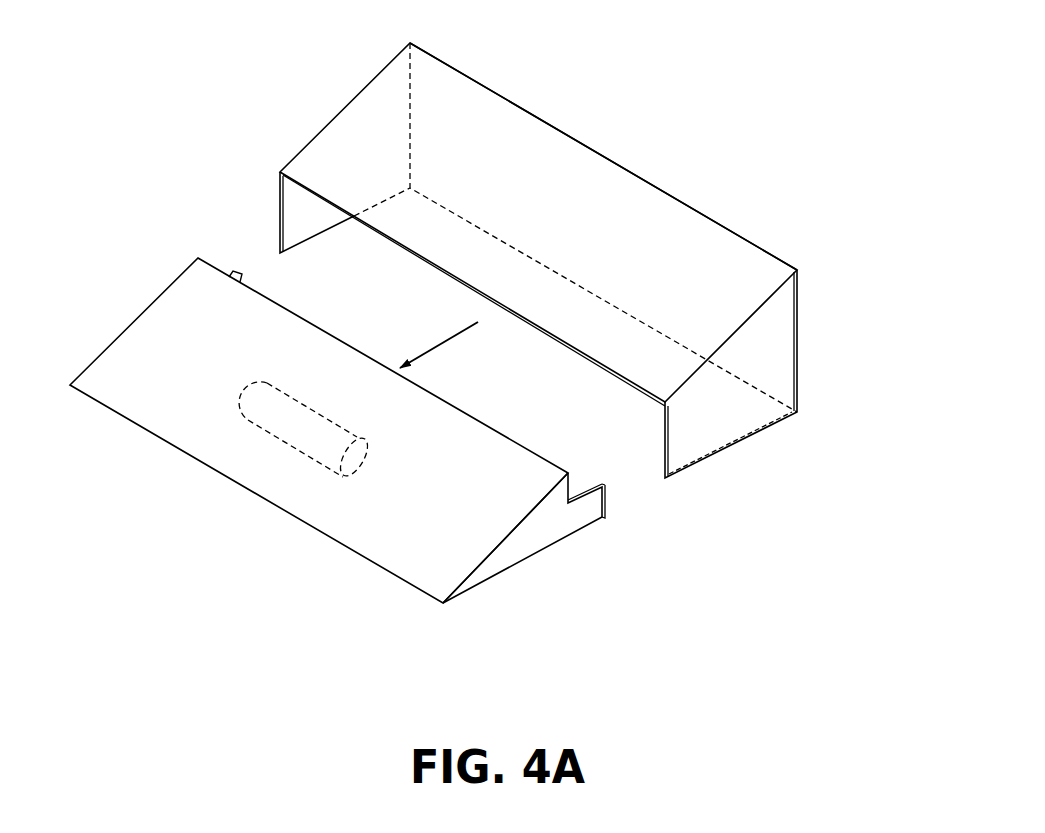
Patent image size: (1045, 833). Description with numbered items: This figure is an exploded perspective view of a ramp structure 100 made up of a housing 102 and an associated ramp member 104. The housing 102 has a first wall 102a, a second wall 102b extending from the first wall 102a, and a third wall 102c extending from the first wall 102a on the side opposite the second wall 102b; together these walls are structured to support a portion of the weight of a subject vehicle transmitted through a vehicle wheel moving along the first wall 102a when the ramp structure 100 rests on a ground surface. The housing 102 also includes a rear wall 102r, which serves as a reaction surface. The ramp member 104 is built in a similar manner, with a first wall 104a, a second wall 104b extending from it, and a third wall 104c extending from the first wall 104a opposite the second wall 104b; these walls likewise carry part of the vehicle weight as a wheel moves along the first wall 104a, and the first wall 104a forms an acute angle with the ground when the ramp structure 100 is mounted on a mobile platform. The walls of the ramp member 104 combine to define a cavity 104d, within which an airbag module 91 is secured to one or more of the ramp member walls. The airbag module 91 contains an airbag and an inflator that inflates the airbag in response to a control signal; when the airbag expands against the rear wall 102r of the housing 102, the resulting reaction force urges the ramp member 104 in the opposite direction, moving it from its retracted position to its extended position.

The ramp structure 100 is at (554, 119).
The housing 102 is at (327, 119).
The first wall 102a is at (705, 297).
The second wall 102b is at (773, 357).
The third wall 102c is at (300, 218).
The rear wall 102r is at (638, 230).
The ramp member 104 is at (136, 316).
The first wall 104a is at (205, 407).
The second wall 104b is at (545, 535).
The third wall 104c is at (234, 274).
The cavity 104d is at (420, 527).
The airbag module 91 is at (290, 448).